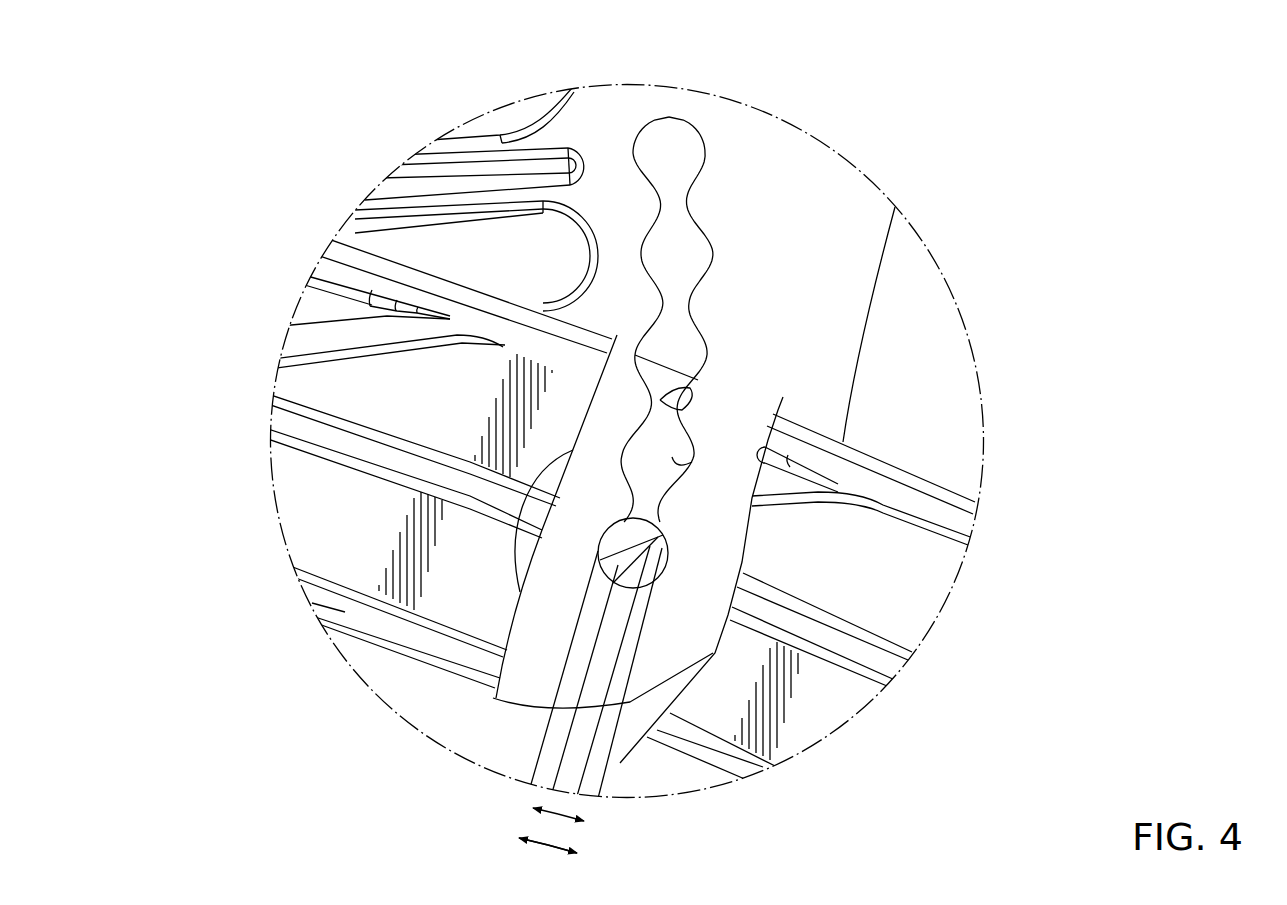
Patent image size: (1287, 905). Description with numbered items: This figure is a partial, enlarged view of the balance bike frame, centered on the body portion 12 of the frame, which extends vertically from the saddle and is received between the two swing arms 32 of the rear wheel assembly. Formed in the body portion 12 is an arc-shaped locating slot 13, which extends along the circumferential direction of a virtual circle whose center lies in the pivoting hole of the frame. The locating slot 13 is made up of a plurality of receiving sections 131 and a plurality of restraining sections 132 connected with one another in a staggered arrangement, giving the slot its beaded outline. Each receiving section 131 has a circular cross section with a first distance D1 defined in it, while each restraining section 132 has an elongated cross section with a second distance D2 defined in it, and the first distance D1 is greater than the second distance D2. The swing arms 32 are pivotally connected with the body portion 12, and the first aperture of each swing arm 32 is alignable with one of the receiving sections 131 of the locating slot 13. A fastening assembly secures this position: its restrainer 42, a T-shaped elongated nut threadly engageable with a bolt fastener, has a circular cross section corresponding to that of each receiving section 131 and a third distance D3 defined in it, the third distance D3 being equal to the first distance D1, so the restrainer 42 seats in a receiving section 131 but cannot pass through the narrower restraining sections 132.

The body portion 12 is at (823, 210).
The arc-shaped locating slot 13 is at (690, 160).
The receiving sections 131 is at (672, 457).
The restraining sections 132 is at (700, 382).
The swing arms 32 is at (310, 600).
The restrainer 42 is at (660, 557).
The first distance D1 is at (545, 845).
The second distance D2 is at (558, 814).
The third distance D3 is at (548, 845).